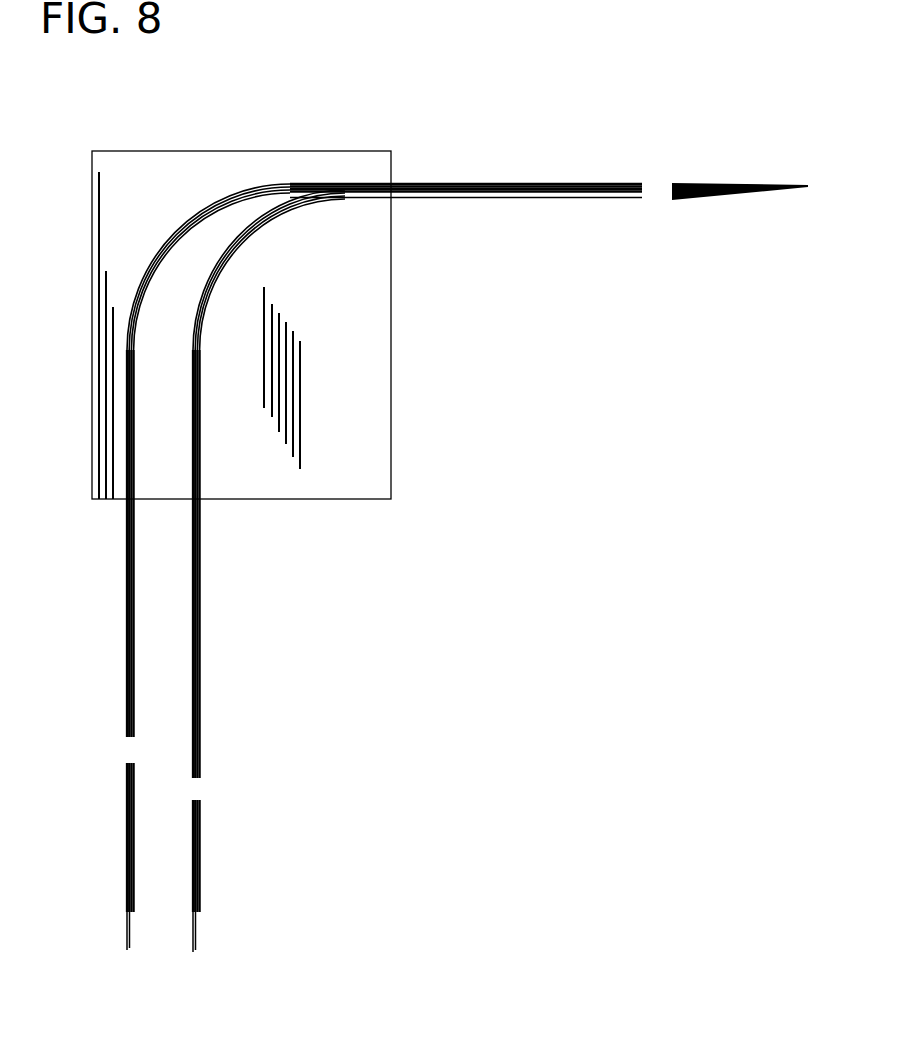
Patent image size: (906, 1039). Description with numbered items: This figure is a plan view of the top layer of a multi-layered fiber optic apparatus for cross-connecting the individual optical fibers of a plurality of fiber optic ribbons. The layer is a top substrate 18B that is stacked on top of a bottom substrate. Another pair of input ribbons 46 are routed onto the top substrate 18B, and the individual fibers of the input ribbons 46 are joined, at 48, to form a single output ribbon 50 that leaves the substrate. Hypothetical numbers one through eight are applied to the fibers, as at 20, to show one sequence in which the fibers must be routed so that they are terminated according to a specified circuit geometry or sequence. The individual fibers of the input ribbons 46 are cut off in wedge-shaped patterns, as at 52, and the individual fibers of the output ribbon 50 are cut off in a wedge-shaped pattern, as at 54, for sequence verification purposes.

The top substrate 18B is at (362, 383).
The designated sequence 20 is at (657, 233).
The input ribbons 46 is at (132, 660).
The joining location 48 is at (292, 202).
The output ribbon 50 is at (505, 185).
The wedge-shaped cut-off patterns of input ribbons 52 is at (132, 923).
The wedge-shaped cut-off pattern of output ribbon 54 is at (760, 195).